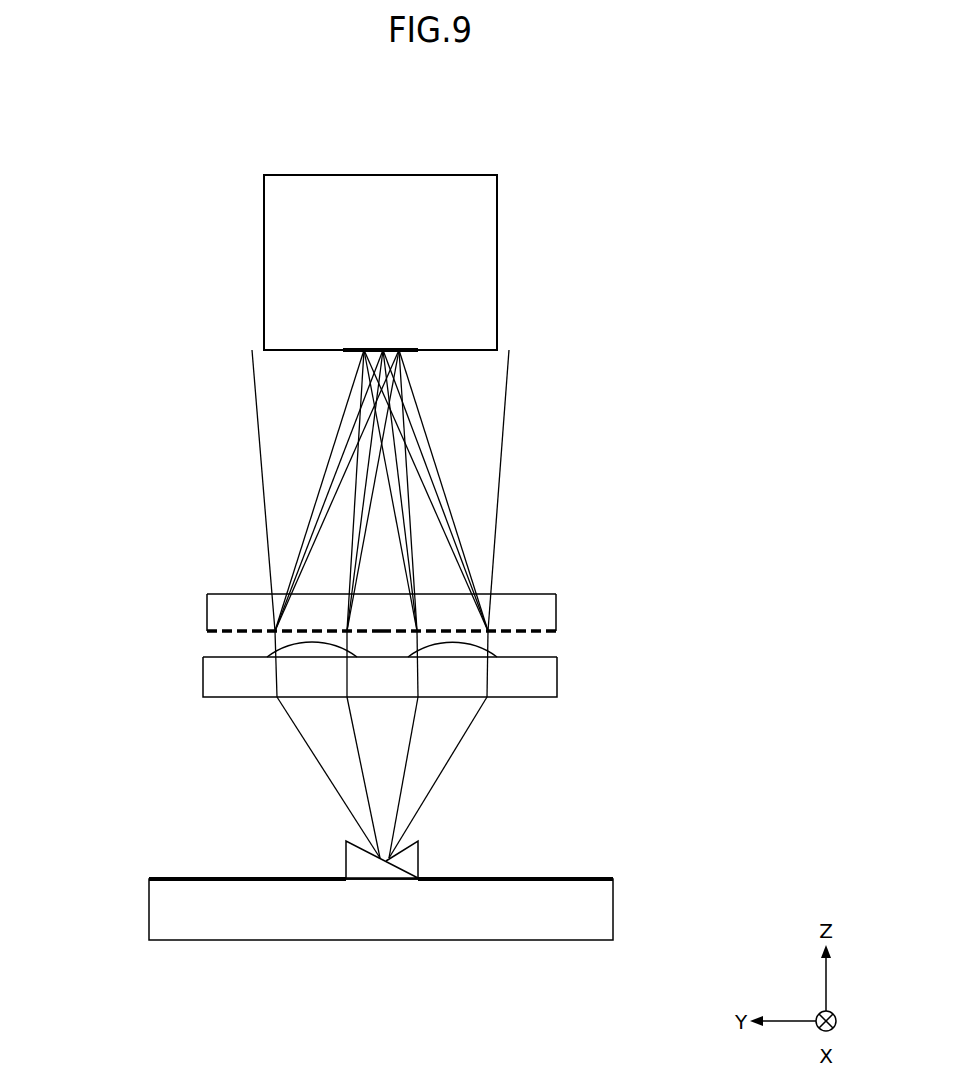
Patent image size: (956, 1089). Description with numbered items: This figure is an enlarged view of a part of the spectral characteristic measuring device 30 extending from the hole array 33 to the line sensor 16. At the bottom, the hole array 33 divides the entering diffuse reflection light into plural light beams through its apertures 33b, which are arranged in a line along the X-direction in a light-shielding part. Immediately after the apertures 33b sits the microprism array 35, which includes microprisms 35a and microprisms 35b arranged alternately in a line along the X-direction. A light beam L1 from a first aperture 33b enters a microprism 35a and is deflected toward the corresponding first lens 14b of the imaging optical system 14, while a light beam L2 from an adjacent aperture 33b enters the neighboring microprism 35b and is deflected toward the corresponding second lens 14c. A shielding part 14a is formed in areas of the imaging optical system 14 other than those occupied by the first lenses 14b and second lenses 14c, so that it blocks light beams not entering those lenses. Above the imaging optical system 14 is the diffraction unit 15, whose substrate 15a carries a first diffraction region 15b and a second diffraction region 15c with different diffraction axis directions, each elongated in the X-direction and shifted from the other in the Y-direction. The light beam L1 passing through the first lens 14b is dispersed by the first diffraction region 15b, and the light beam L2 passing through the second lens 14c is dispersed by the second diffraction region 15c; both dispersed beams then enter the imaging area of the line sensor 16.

The spectral characteristic measuring device 30 is at (67, 108).
The line sensor 16 is at (497, 258).
The diffraction unit 15 is at (382, 574).
The substrate 15a is at (232, 594).
The first diffraction region 15b is at (318, 617).
The second diffraction region 15c is at (445, 618).
The imaging optical system 14 is at (382, 683).
The shielding part 14a is at (233, 658).
The first lens 14b is at (307, 652).
The second lens 14c is at (455, 652).
The light beam L1 is at (325, 775).
The light beam L2 is at (440, 773).
The microprism array 35 is at (381, 847).
The microprism 35a is at (354, 858).
The microprism 35b is at (410, 858).
The hole array 33 is at (411, 940).
The aperture 33b is at (385, 879).